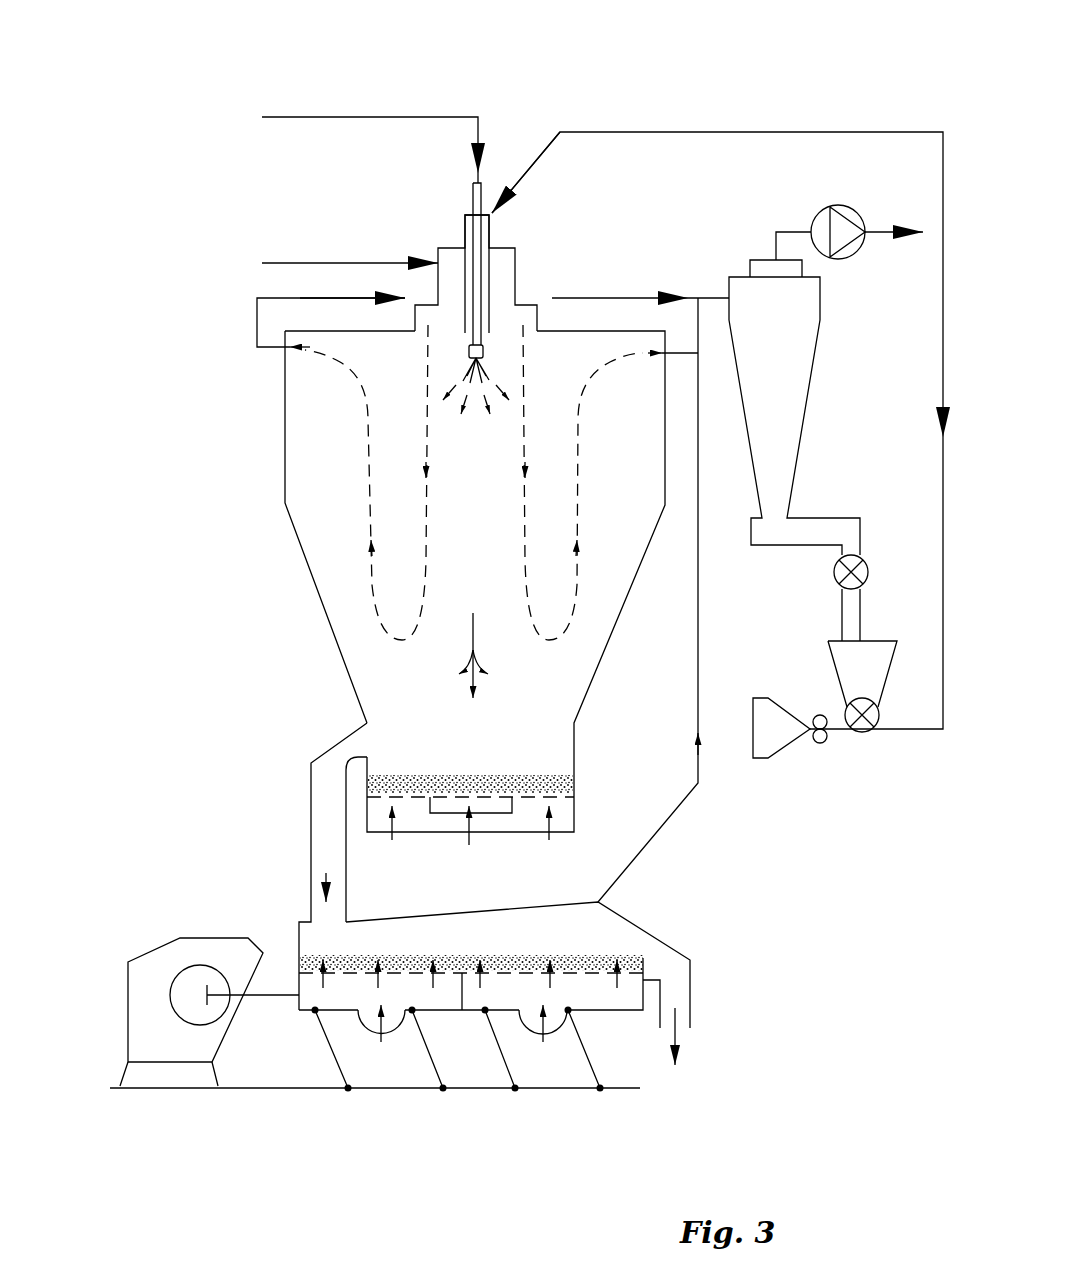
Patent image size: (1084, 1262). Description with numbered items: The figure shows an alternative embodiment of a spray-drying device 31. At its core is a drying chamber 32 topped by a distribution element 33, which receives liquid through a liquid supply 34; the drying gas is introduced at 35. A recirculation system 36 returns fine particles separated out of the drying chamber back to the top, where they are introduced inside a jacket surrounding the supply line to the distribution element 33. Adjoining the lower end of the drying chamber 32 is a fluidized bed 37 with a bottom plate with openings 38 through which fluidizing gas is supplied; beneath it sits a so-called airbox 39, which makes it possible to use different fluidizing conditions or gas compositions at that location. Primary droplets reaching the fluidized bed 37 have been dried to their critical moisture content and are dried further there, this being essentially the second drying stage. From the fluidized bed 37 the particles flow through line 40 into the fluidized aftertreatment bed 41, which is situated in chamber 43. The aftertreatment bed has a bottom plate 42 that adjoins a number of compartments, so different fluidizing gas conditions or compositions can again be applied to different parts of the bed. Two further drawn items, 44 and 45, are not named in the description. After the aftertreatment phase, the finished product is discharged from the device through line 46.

The spray-drying device 31 is at (522, 110).
The drying chamber 32 is at (627, 493).
The distribution element 33 is at (467, 352).
The liquid supply 34 is at (322, 117).
The drying gas inlet 35 is at (275, 262).
The recirculation system 36 is at (690, 132).
The fluidized bed 37 is at (573, 788).
The bottom plate with openings 38 is at (573, 800).
The airbox 39 is at (497, 813).
The line 40 is at (309, 855).
The fluidized aftertreatment bed 41 is at (307, 956).
The bottom plate 42 is at (347, 975).
The chamber 43 is at (620, 942).
The exhaust gas line 44 is at (704, 298).
The cyclone separator 45 is at (787, 388).
The line 46 is at (690, 1013).